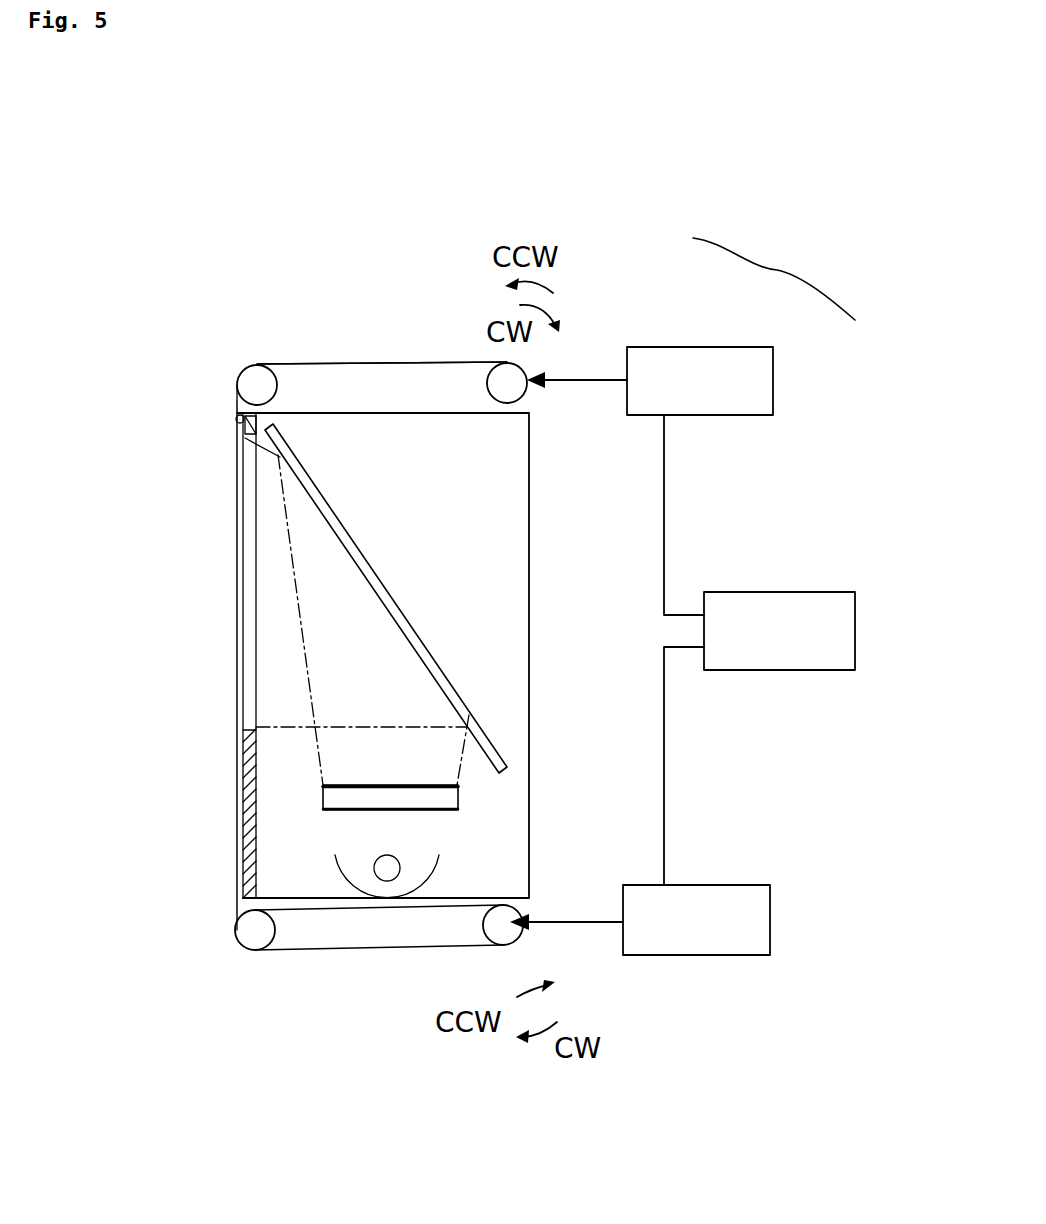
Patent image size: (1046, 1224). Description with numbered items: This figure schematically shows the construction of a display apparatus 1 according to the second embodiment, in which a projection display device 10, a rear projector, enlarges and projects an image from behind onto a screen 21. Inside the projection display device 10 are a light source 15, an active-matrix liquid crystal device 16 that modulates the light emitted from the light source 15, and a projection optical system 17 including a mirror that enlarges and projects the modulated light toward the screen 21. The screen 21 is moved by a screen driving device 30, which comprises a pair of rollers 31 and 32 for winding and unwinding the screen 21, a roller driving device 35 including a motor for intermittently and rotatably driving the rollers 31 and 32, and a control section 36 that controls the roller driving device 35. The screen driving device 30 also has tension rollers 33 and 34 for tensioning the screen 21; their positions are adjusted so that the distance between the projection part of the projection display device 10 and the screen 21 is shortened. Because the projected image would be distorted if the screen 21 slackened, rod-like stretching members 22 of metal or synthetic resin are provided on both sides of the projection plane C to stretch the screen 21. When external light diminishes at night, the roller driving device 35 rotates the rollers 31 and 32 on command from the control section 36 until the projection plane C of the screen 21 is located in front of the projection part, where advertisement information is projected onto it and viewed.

The display apparatus 1 is at (764, 218).
The projection display device 10 is at (529, 565).
The light source 15 is at (443, 873).
The active-matrix liquid crystal device 16 is at (427, 797).
The projection optical system 17 is at (377, 570).
The screen 21 is at (398, 362).
The stretching member 22 is at (237, 422).
The screen driving device 30 is at (774, 277).
The roller 31 is at (528, 372).
The roller 32 is at (517, 938).
The tension roller 33 is at (257, 383).
The tension roller 34 is at (250, 938).
The roller driving device 35 is at (703, 357).
The control section 36 is at (763, 592).
The projection plane C is at (235, 590).